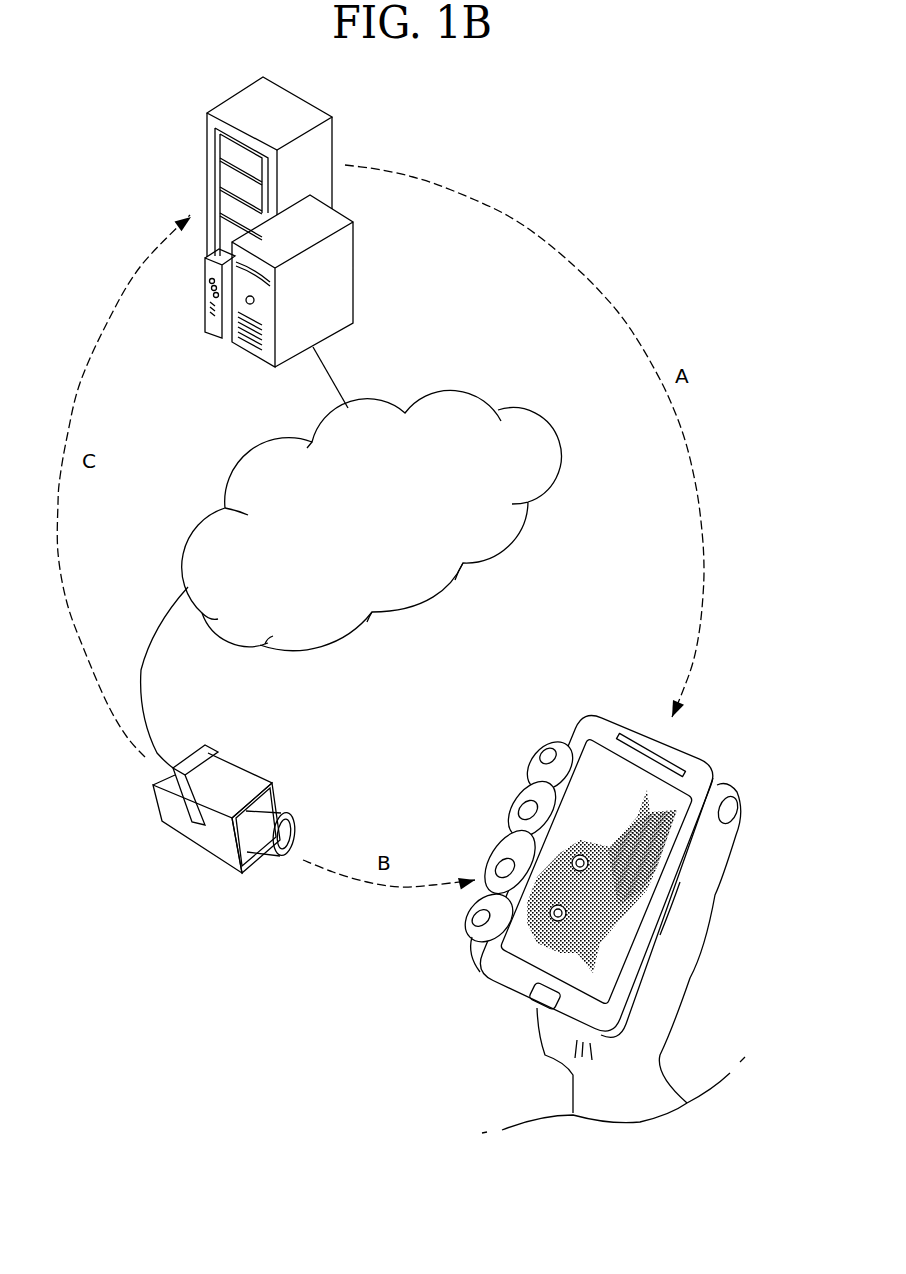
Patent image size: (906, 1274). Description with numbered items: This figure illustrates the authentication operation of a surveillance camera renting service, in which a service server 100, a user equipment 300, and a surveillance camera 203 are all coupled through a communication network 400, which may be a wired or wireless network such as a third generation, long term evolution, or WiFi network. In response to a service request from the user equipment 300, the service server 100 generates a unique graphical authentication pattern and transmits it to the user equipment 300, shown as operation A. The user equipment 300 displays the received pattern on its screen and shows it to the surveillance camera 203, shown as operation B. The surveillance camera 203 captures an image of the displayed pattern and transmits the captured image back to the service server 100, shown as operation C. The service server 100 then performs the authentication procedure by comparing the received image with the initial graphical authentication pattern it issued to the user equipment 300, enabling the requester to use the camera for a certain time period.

The service server 100 is at (335, 212).
The communication network 400 is at (457, 385).
The surveillance camera 203 is at (202, 848).
The user equipment 300 is at (682, 740).